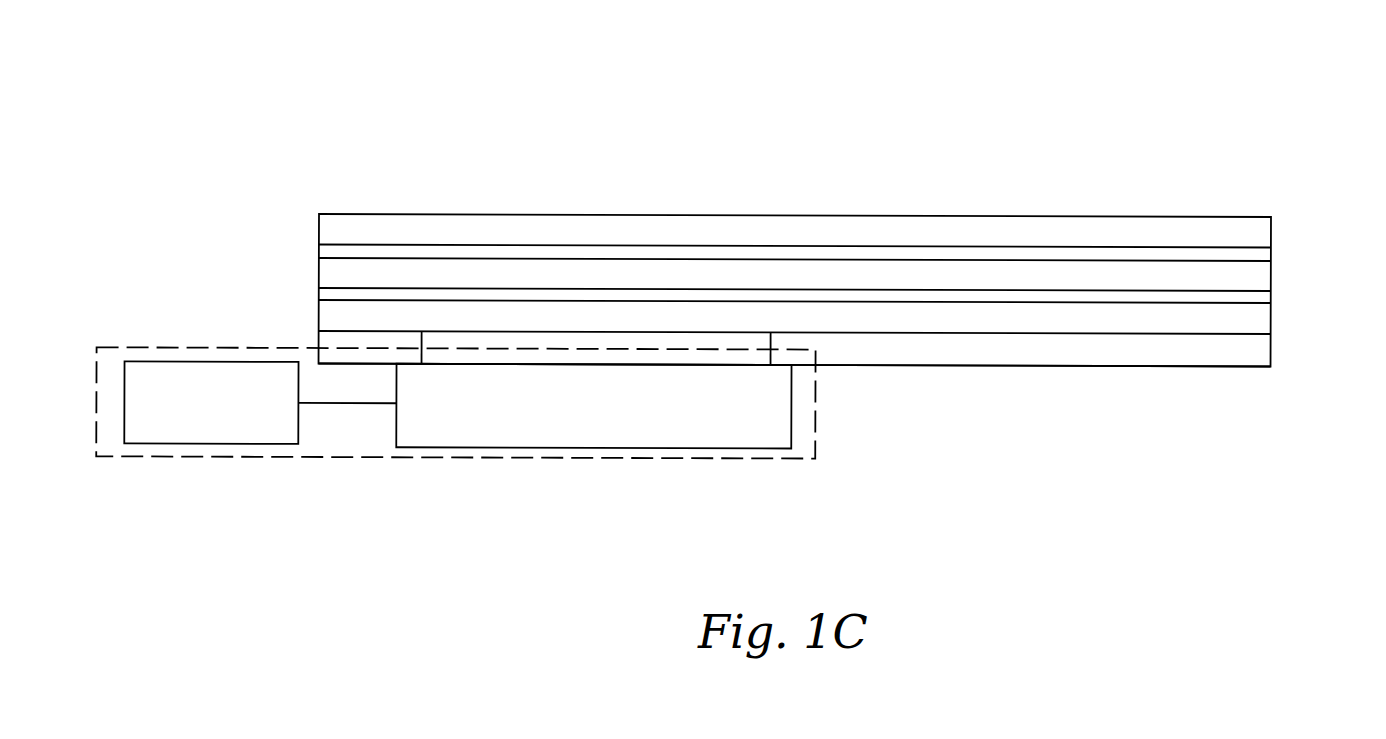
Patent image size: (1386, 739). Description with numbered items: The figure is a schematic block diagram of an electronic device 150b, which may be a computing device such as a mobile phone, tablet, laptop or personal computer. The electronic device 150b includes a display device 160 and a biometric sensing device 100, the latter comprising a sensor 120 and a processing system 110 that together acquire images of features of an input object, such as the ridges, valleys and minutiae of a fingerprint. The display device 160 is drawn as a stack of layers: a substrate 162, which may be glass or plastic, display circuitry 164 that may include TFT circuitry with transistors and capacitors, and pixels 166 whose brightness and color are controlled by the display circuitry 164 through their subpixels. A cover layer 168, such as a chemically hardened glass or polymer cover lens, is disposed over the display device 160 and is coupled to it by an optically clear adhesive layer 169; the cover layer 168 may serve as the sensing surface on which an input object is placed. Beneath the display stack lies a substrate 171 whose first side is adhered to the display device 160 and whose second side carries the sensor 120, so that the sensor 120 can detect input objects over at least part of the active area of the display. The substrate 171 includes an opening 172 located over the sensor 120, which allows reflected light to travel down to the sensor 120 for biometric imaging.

The electronic device 150b is at (238, 108).
The display device 160 is at (288, 249).
The cover layer 168 is at (1272, 229).
The optically clear adhesive layer 169 is at (1272, 253).
The pixels 166 is at (1272, 277).
The display circuitry 164 is at (1272, 300).
The substrate 162 is at (1272, 327).
The substrate 171 is at (1272, 352).
The opening 172 is at (709, 357).
The biometric sensing device 100 is at (817, 397).
The processing system 110 is at (226, 417).
The sensor 120 is at (620, 418).